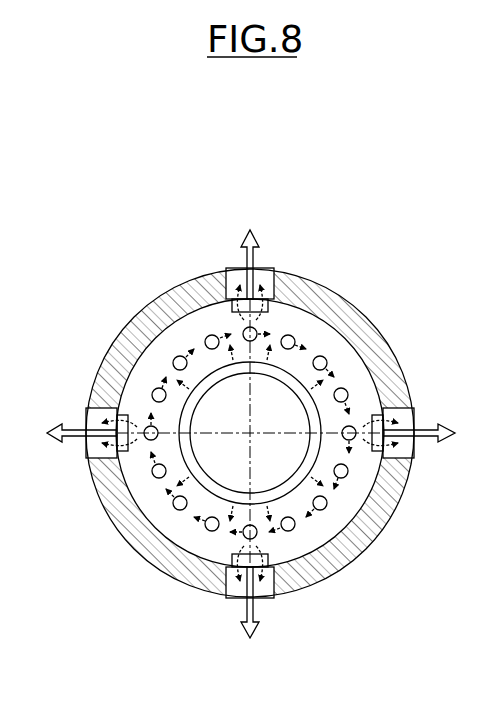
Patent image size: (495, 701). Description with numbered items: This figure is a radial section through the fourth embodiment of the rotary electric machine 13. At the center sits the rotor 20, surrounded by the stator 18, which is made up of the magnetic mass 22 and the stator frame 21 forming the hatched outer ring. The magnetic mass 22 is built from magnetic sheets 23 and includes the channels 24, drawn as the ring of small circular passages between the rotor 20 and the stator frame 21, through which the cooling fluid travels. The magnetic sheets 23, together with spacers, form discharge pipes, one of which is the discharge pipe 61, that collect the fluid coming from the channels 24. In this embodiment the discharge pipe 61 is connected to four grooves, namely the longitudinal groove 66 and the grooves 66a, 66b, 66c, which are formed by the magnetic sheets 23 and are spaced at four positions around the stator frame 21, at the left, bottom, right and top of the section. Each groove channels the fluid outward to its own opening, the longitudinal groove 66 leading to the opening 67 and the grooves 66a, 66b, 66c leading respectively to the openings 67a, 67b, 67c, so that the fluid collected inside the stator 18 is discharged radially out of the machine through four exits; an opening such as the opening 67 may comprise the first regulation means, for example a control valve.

The rotary electric machine 13 is at (350, 202).
The stator 18 is at (395, 268).
The rotor 20 is at (218, 418).
The stator frame 21 is at (158, 313).
The magnetic mass 22 is at (305, 433).
The magnetic sheets 23 is at (335, 351).
The channels 24 is at (311, 553).
The discharge pipe 61 is at (362, 502).
The longitudinal groove 66 is at (87, 411).
The groove 66a is at (226, 598).
The groove 66b is at (415, 410).
The groove 66c is at (226, 270).
The opening 67 is at (87, 453).
The opening 67a is at (273, 598).
The opening 67b is at (415, 455).
The opening 67c is at (273, 270).